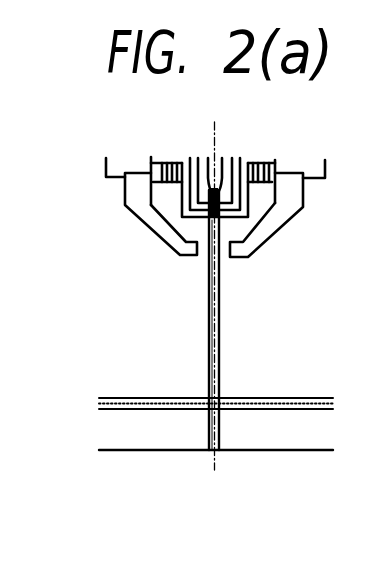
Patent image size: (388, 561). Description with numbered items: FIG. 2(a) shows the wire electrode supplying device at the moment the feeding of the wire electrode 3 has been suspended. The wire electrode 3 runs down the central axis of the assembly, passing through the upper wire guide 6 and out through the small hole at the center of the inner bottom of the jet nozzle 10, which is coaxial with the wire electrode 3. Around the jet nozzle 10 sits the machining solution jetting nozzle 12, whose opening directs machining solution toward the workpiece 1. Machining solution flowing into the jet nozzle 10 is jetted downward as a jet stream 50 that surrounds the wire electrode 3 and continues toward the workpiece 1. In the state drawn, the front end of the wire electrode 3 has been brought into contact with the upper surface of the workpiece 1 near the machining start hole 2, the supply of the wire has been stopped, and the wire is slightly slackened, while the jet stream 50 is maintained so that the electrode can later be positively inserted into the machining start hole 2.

The workpiece 1 is at (281, 440).
The machining start hole 2 is at (208, 435).
The wire electrode 3 is at (220, 225).
The upper wire guide 6 is at (221, 194).
The jet nozzle 10 is at (183, 205).
The machining solution jetting nozzle 12 is at (160, 225).
The jet stream 50 is at (220, 321).